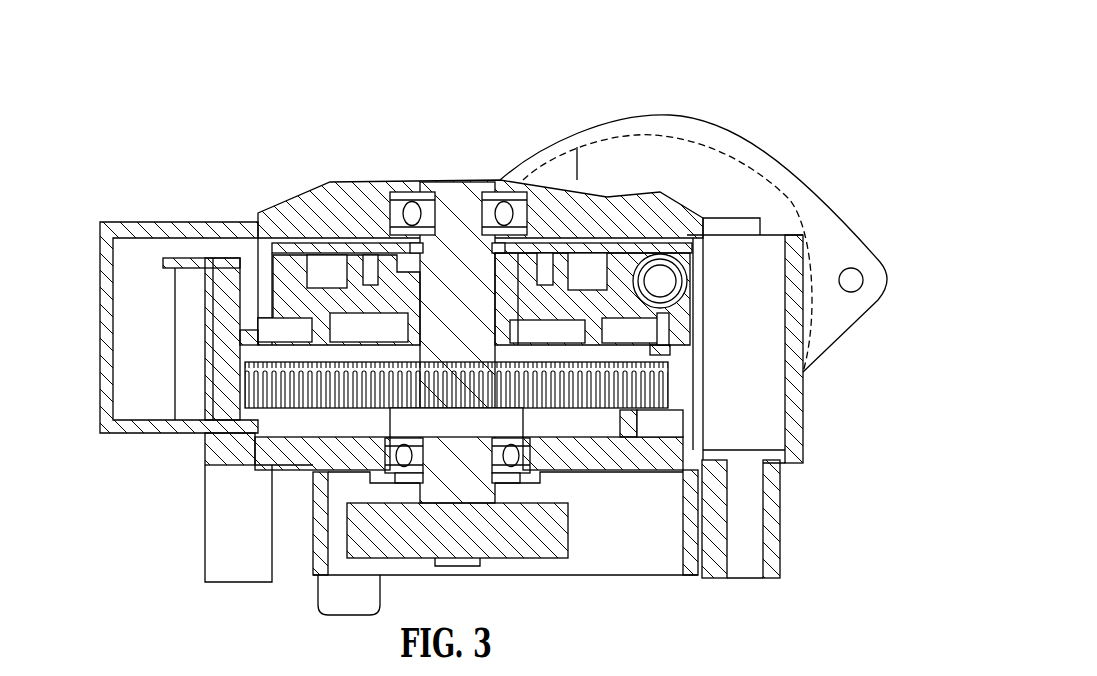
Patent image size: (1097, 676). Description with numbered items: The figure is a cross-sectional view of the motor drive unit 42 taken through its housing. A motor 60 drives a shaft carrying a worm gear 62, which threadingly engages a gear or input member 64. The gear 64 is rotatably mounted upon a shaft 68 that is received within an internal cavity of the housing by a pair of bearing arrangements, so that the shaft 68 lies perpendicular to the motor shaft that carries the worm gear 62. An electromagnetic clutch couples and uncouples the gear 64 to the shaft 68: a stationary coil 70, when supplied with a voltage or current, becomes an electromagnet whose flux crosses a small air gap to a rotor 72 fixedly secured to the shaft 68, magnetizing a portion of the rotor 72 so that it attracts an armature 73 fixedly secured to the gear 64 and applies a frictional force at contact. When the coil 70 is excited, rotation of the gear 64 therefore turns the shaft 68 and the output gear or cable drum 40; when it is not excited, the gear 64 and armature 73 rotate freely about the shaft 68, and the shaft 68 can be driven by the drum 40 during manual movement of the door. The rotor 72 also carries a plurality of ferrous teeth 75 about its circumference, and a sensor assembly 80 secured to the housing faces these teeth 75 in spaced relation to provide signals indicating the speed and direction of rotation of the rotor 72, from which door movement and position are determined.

The output gear or cable drum 40 is at (380, 530).
The motor drive unit 42 is at (685, 98).
The motor 60 is at (733, 175).
The worm gear 62 is at (670, 285).
The gear or input member 64 is at (297, 307).
The shaft 68 is at (452, 250).
The coil 70 is at (587, 418).
The rotor 72 is at (273, 387).
The armature 73 is at (663, 330).
The ferrous teeth 75 is at (648, 405).
The sensor assembly 80 is at (222, 285).